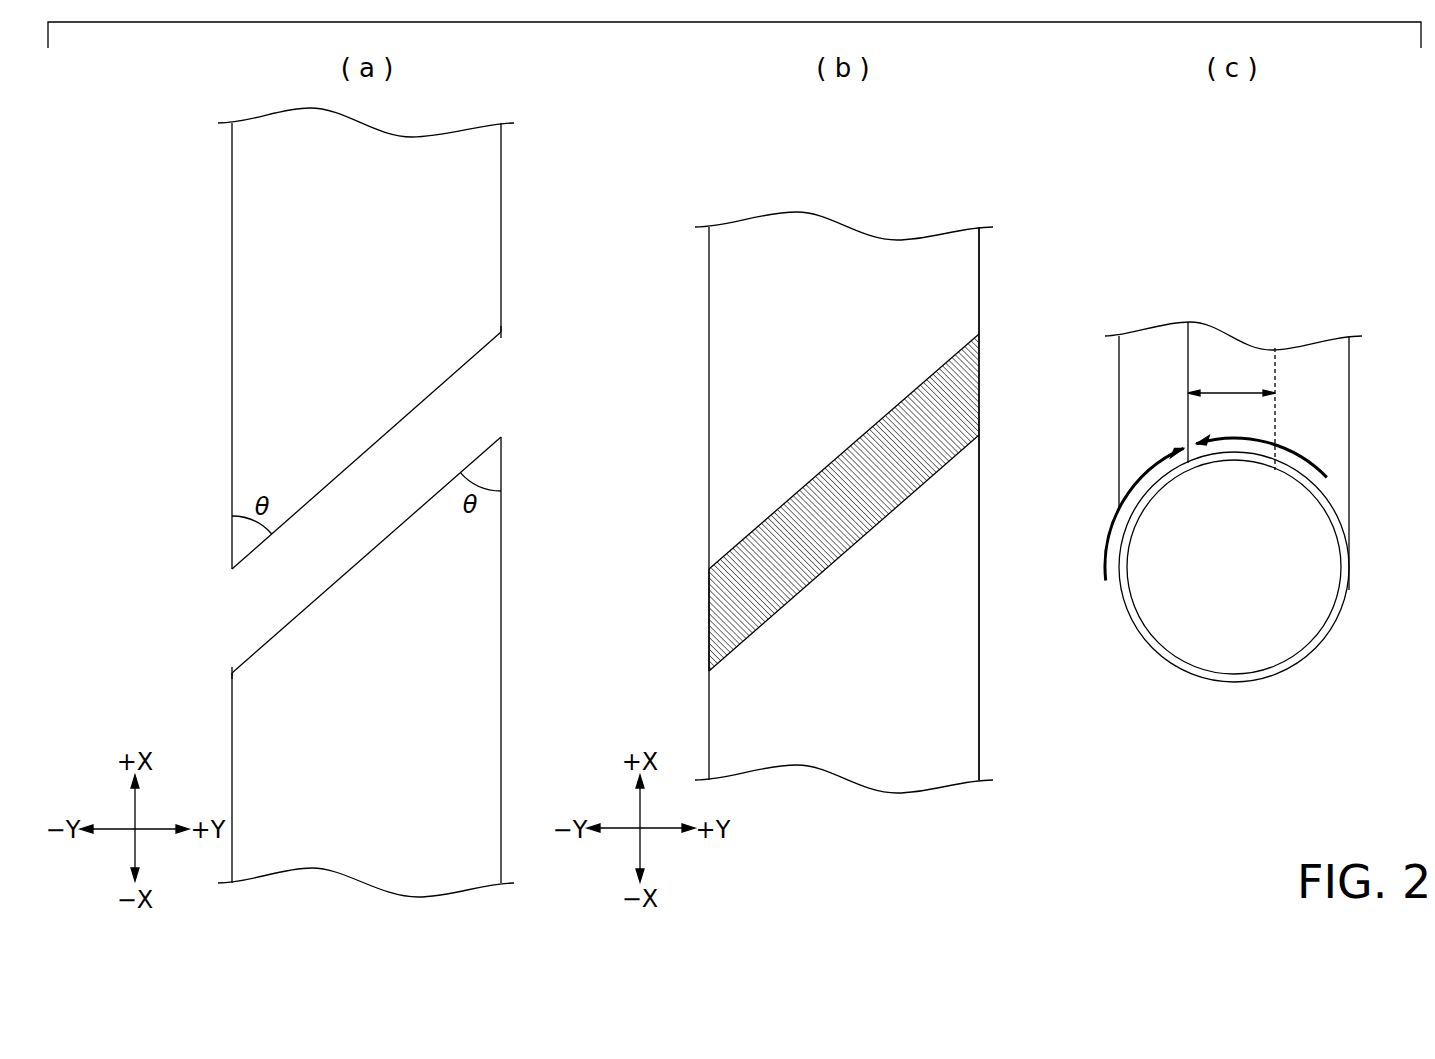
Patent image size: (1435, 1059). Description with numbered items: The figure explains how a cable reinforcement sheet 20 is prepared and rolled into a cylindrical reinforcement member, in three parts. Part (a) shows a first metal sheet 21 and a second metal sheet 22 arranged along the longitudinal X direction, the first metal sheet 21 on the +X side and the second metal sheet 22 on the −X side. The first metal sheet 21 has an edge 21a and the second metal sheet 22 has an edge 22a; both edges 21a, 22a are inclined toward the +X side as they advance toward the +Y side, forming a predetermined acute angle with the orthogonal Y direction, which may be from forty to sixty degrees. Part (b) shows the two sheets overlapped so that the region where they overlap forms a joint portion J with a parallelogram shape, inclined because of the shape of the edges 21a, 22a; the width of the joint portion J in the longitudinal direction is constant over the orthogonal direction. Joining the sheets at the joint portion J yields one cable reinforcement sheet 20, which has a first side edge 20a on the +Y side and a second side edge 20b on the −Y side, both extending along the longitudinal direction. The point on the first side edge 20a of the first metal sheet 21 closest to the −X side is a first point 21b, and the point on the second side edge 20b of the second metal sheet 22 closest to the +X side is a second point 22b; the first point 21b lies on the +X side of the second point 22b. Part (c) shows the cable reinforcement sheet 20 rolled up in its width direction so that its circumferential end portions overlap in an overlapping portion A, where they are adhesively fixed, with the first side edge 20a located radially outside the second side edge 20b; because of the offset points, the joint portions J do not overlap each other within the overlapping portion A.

The cable reinforcement sheet 20 is at (1028, 262).
The first side edge 20a is at (979, 667).
The second side edge 20b is at (709, 700).
The first metal sheet 21 is at (514, 224).
The edge 21a is at (366, 453).
The first point 21b is at (502, 332).
The second metal sheet 22 is at (514, 657).
The edge 22a is at (367, 554).
The second point 22b is at (231, 673).
The joint portion J is at (836, 520).
The overlapping portion A is at (1231, 379).